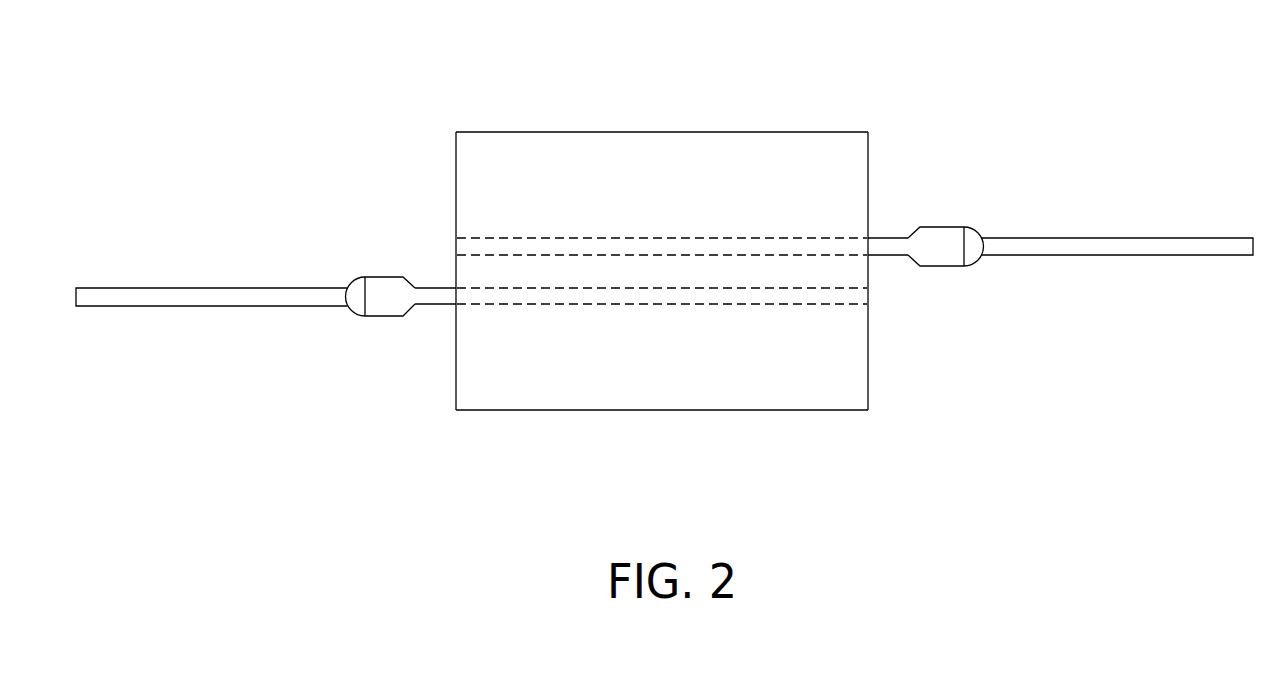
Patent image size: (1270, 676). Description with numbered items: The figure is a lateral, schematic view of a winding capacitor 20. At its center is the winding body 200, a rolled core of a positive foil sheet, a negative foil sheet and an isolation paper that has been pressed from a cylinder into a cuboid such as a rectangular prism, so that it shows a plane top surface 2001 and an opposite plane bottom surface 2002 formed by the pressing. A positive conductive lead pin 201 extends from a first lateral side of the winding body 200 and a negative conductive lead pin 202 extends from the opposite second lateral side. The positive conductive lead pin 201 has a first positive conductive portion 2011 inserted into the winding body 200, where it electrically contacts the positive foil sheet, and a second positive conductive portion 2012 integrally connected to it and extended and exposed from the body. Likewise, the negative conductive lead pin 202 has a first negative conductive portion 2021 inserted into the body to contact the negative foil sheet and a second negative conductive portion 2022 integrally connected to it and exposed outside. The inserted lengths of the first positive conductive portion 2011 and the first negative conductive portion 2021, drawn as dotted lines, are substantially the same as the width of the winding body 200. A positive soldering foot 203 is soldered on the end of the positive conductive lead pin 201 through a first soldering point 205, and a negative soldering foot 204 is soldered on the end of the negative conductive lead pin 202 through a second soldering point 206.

The winding capacitor 20 is at (878, 26).
The winding body 200 is at (615, 140).
The plane top surface 2001 is at (715, 132).
The plane bottom surface 2002 is at (717, 410).
The positive conductive lead pin 201 is at (447, 380).
The first positive conductive portion 2011 is at (478, 295).
The second positive conductive portion 2012 is at (385, 303).
The negative conductive lead pin 202 is at (998, 155).
The first negative conductive portion 2021 is at (825, 247).
The second negative conductive portion 2022 is at (942, 247).
The positive soldering foot 203 is at (187, 300).
The negative soldering foot 204 is at (1110, 245).
The first soldering point 205 is at (358, 288).
The second soldering point 206 is at (975, 257).